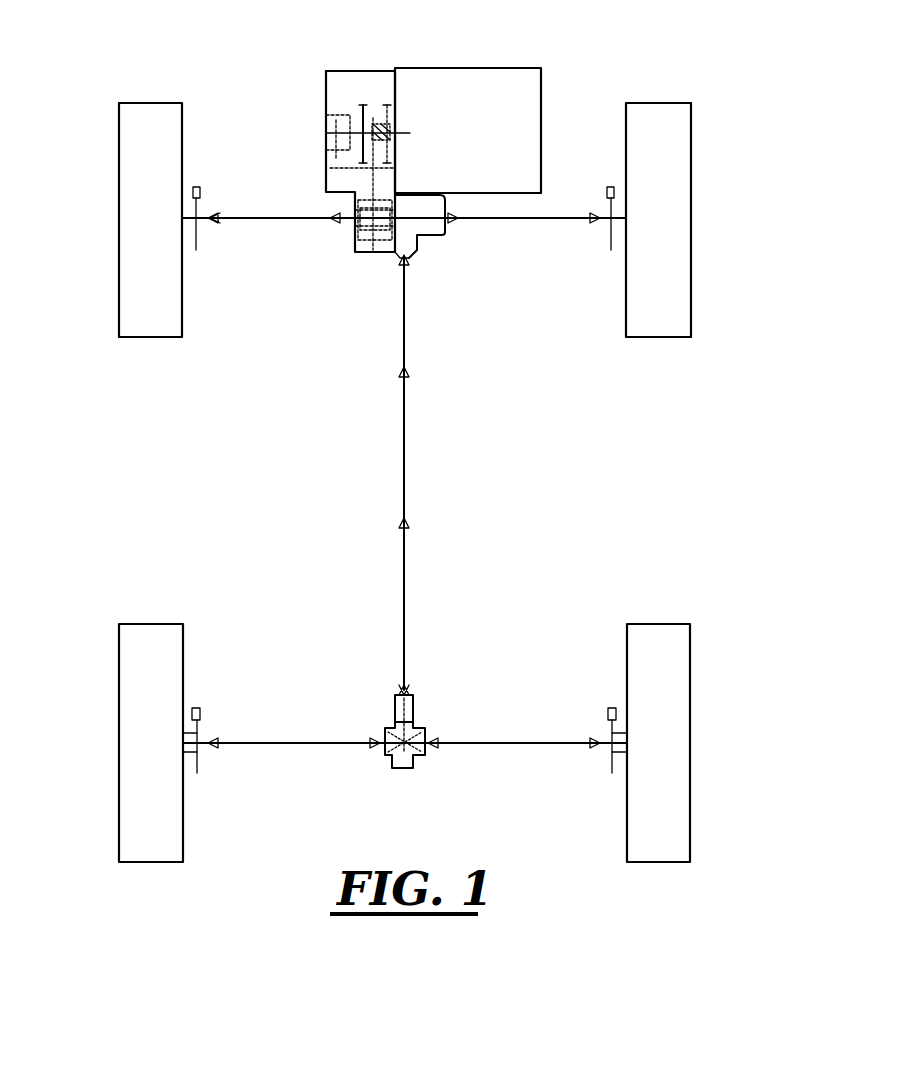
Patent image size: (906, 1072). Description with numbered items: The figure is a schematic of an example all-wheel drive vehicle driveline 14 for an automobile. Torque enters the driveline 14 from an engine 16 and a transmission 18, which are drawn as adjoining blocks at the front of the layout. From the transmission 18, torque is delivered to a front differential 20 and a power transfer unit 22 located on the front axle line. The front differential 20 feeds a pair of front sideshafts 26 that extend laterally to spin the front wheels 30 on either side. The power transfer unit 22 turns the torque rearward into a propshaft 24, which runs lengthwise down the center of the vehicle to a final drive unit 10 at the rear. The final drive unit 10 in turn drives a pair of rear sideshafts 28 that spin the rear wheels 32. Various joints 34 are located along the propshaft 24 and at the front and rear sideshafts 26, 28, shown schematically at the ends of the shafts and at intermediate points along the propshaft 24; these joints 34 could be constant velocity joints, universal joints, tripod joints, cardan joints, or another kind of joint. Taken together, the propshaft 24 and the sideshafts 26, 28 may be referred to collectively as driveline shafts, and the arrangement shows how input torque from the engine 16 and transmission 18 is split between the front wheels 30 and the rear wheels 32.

The final drive unit 10 is at (412, 720).
The vehicle driveline 14 is at (585, 463).
The engine 16 is at (518, 90).
The transmission 18 is at (345, 82).
The front differential 20 is at (357, 240).
The power transfer unit 22 is at (426, 237).
The propshaft 24 is at (407, 448).
The front sideshafts 26 is at (263, 218).
The rear sideshafts 28 is at (296, 742).
The front wheels 30 is at (148, 303).
The rear wheels 32 is at (150, 810).
The joints 34 is at (213, 226).